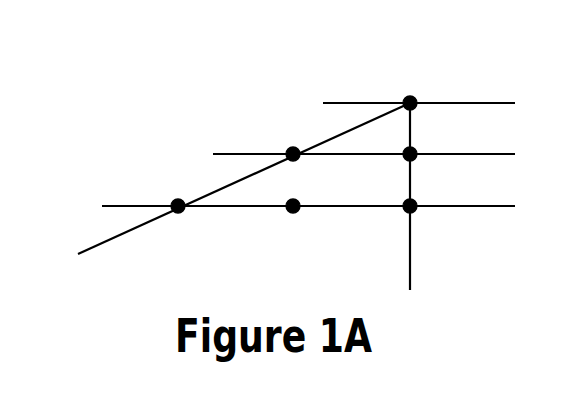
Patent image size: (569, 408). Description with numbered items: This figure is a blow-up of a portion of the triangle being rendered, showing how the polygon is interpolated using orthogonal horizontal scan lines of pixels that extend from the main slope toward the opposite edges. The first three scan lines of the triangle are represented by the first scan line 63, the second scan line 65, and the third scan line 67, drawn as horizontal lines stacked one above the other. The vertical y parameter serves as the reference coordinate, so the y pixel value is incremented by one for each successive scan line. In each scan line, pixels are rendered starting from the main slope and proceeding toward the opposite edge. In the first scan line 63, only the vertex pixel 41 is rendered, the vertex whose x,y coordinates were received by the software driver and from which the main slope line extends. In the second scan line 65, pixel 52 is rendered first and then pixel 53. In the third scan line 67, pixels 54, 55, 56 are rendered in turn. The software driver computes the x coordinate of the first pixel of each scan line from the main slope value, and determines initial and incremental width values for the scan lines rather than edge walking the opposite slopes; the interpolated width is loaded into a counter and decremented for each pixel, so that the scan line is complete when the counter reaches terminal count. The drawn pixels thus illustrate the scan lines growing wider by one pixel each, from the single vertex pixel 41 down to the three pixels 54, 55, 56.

The vertex pixel 41 is at (410, 97).
The pixel 52 is at (293, 148).
The pixel 53 is at (416, 154).
The pixel 54 is at (178, 200).
The pixel 55 is at (293, 213).
The pixel 56 is at (416, 206).
The first scan line 63 is at (495, 103).
The second scan line 65 is at (495, 154).
The third scan line 67 is at (495, 206).